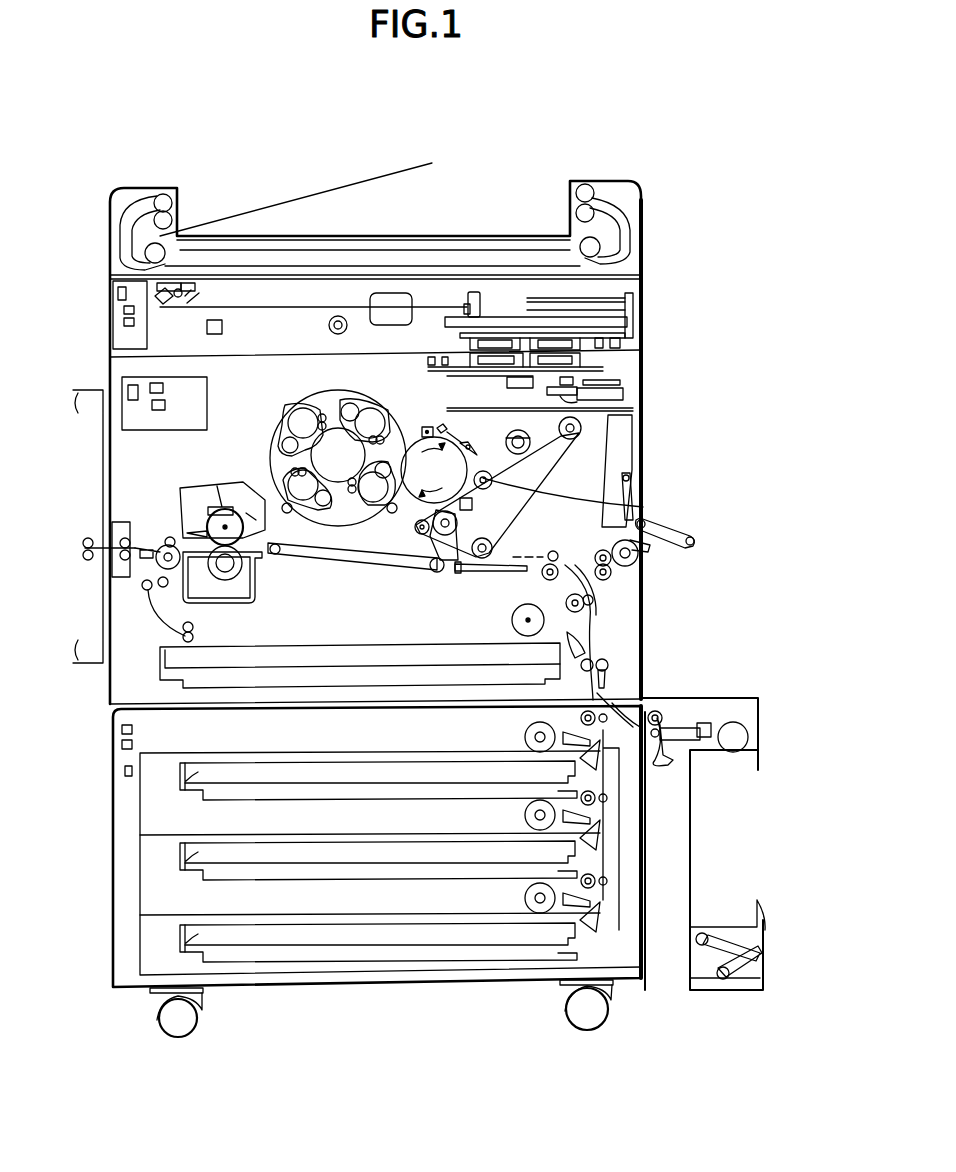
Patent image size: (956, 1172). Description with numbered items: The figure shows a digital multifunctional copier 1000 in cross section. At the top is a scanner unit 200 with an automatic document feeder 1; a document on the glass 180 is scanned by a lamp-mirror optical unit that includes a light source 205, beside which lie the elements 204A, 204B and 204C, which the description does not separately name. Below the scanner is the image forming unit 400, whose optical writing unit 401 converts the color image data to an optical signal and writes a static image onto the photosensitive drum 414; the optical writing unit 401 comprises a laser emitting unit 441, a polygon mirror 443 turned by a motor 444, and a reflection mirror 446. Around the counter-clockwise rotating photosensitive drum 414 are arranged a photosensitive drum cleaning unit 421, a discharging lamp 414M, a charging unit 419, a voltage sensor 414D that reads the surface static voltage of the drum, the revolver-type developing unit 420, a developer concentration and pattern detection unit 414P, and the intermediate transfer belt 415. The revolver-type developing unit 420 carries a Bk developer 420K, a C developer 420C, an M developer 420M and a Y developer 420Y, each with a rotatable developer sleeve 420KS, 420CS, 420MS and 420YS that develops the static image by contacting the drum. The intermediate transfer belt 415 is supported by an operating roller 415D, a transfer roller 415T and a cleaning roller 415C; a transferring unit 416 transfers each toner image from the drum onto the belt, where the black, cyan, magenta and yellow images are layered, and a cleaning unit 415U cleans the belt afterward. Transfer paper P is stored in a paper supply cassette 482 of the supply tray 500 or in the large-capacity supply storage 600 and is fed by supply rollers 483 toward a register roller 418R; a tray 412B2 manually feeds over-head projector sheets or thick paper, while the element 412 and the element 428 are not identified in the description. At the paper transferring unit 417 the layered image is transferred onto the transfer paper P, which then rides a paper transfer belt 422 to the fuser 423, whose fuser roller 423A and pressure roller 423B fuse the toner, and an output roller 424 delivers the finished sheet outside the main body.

The automatic document feeder 1 is at (638, 192).
The digital multifunctional copier 1000 is at (673, 128).
The glass 180 is at (368, 265).
The scanner unit 200 is at (643, 287).
The document guide 204A is at (197, 297).
The document guide 204B is at (160, 290).
The document sensor unit 204C is at (170, 333).
The light source 205 is at (183, 297).
The image forming unit 400 is at (668, 505).
The optical writing unit 401 is at (663, 361).
The exposure device 412 is at (510, 386).
The tray 412B2 is at (648, 483).
The photosensitive drum 414 is at (470, 498).
The voltage sensor 414D is at (434, 470).
The discharging lamp 414M is at (506, 440).
The developer concentration and pattern detection unit 414P is at (438, 549).
The intermediate transfer belt 415 is at (600, 475).
The cleaning roller 415C is at (459, 620).
The operating roller 415D is at (580, 428).
The transfer roller 415T is at (668, 503).
The cleaning unit 415U is at (413, 566).
The transferring unit 416 is at (468, 535).
The paper transferring unit 417 is at (465, 572).
The register roller 418R is at (547, 578).
The charging unit 419 is at (426, 427).
The revolver-type developing unit 420 is at (313, 398).
The Y developer 420Y is at (290, 412).
The developer sleeve 420YS is at (282, 443).
The Bk developer 420K is at (372, 398).
The developer sleeve 420KS is at (350, 403).
The M developer 420M is at (287, 480).
The developer sleeve 420MS is at (322, 506).
The C developer 420C is at (362, 505).
The developer sleeve 420CS is at (398, 570).
The photosensitive drum cleaning unit 421 is at (502, 463).
The paper transfer belt 422 is at (313, 568).
The fuser 423 is at (237, 603).
The fuser roller 423A is at (210, 510).
The pressure roller 423B is at (240, 570).
The output roller 424 is at (127, 521).
The manual feed tray 428 is at (163, 660).
The laser emitting unit 441 is at (641, 410).
The polygon mirror 443 is at (630, 380).
The motor 444 is at (628, 392).
The reflection mirror 446 is at (388, 392).
The paper supply cassette 482 is at (195, 777).
The supply rollers 483 is at (545, 620).
The supply tray 500 is at (113, 760).
The large-capacity supply storage 600 is at (773, 742).
The transfer sheet P is at (725, 828).